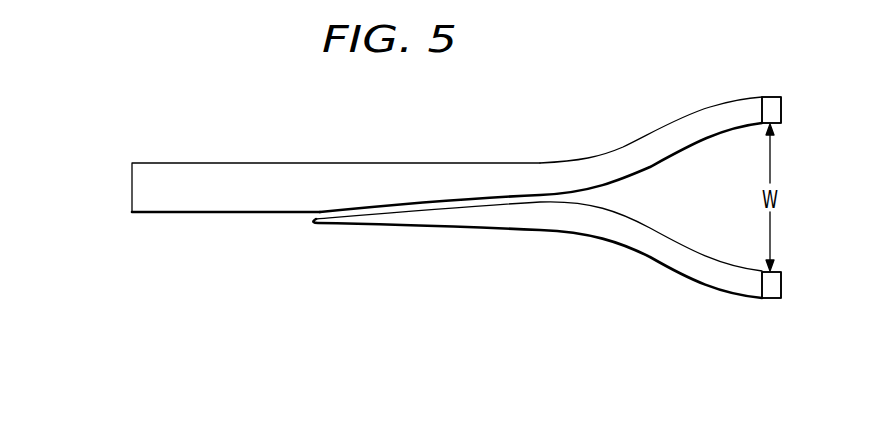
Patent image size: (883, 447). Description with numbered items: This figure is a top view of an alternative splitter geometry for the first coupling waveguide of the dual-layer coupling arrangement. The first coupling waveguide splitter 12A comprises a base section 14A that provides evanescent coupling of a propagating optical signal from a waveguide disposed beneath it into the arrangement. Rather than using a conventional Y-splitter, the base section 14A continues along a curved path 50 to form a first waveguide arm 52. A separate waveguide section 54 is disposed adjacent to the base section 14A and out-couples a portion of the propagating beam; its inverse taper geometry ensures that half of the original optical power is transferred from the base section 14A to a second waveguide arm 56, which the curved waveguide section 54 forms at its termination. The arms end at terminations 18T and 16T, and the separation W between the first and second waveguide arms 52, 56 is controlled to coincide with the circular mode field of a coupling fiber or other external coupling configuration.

The first coupling waveguide splitter 12A is at (548, 262).
The base section 14A is at (195, 163).
The curved path 50 is at (505, 163).
The waveguide section 54 is at (503, 230).
The first waveguide arm 52 is at (763, 100).
The second waveguide arm 56 is at (760, 298).
The first output tip 18T is at (782, 112).
The second output tip 16T is at (782, 285).